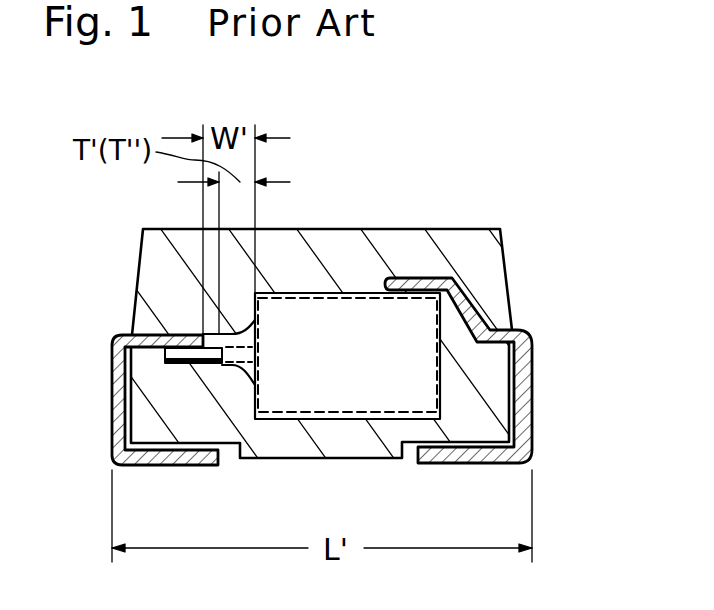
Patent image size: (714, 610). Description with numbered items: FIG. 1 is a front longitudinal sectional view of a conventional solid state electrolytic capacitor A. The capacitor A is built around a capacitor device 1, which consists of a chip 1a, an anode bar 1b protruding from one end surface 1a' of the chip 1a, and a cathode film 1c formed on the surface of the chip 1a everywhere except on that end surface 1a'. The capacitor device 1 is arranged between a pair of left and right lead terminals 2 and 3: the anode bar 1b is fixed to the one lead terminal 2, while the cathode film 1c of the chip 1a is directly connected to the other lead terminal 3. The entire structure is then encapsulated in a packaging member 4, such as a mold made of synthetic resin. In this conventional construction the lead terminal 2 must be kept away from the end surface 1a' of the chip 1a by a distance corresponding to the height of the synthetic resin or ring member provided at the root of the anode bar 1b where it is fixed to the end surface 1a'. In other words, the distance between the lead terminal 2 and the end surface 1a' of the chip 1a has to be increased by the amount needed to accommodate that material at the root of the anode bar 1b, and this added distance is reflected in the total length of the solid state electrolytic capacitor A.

The capacitor device 1 is at (359, 292).
The chip 1a is at (347, 289).
The end surface 1a' is at (237, 426).
The anode bar 1b is at (185, 354).
The cathode film 1c is at (311, 292).
The lead terminal 2 is at (112, 353).
The lead terminal 3 is at (533, 352).
The packaging member 4 is at (163, 230).
The solid state electrolytic capacitor A is at (515, 290).